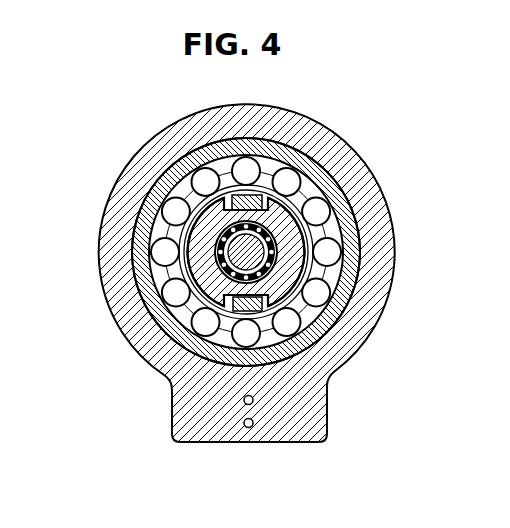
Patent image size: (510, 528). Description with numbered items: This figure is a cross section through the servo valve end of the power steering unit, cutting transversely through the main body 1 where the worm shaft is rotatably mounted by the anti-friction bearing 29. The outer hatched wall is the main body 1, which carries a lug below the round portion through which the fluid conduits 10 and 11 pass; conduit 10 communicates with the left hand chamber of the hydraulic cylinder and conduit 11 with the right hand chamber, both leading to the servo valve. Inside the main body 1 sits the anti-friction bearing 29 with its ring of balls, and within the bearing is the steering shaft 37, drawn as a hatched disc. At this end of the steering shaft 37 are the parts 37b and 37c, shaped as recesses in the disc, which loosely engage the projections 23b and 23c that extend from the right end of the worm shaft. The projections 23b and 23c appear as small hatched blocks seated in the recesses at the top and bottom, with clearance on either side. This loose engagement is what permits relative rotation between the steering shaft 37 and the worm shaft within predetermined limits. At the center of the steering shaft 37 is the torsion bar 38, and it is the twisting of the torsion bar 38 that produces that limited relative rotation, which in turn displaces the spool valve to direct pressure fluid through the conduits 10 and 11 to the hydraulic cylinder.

The main body 1 is at (172, 137).
The fluid conduit 10 is at (248, 428).
The fluid conduit 11 is at (252, 404).
The projection 23b is at (266, 192).
The projection 23c is at (254, 310).
The anti-friction bearing 29 is at (338, 191).
The steering shaft 37 is at (302, 288).
The part of steering shaft 37b is at (197, 240).
The part of steering shaft 37c is at (297, 222).
The torsion bar 38 is at (216, 268).